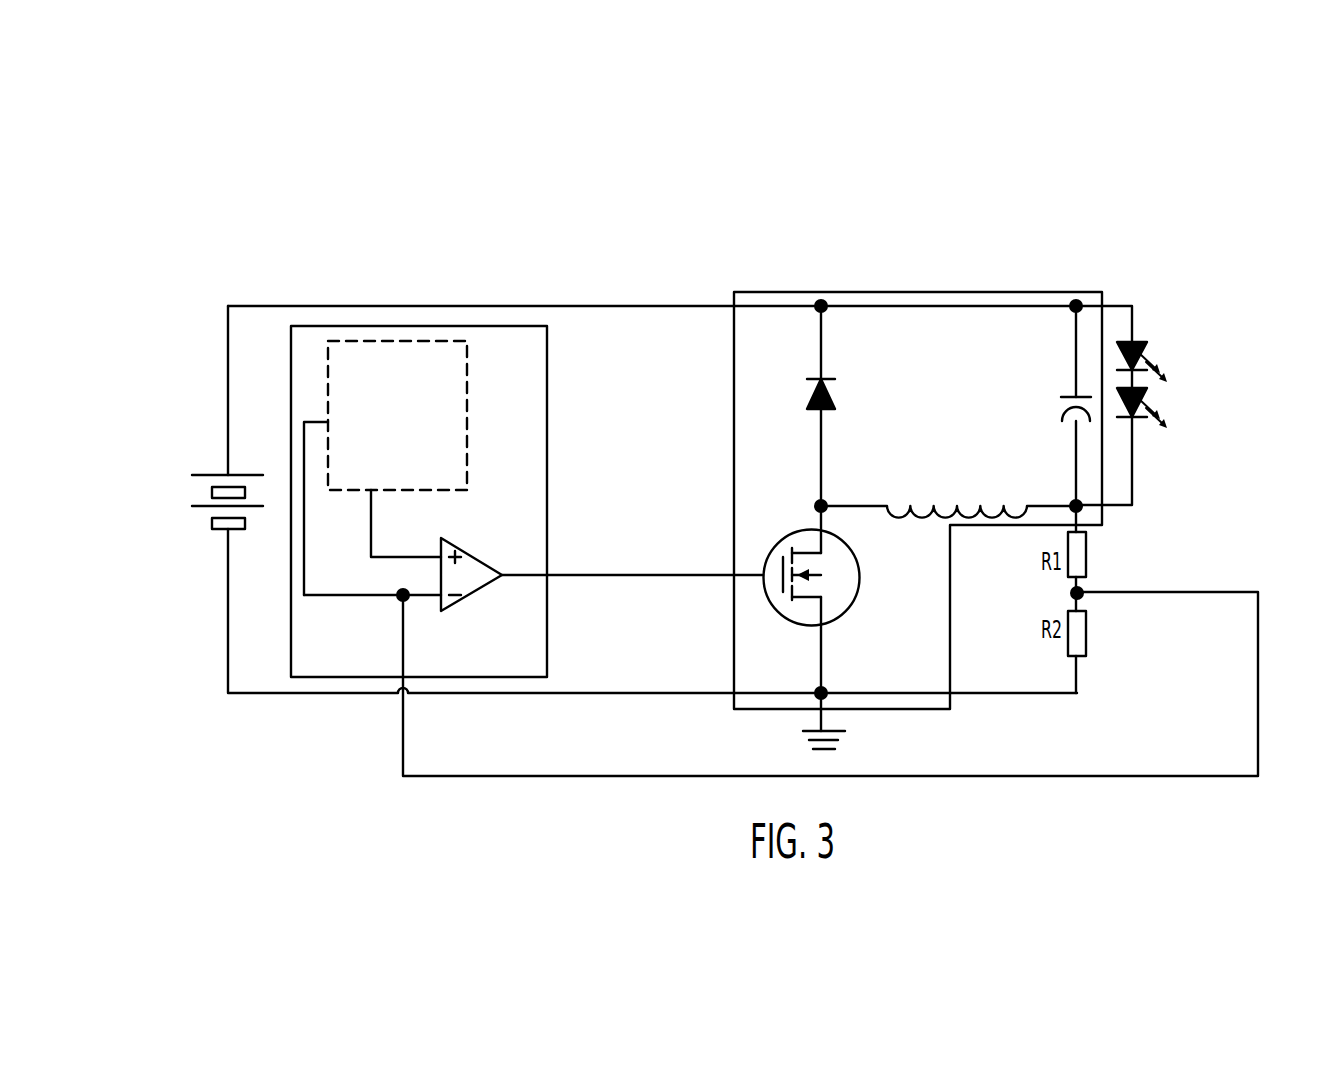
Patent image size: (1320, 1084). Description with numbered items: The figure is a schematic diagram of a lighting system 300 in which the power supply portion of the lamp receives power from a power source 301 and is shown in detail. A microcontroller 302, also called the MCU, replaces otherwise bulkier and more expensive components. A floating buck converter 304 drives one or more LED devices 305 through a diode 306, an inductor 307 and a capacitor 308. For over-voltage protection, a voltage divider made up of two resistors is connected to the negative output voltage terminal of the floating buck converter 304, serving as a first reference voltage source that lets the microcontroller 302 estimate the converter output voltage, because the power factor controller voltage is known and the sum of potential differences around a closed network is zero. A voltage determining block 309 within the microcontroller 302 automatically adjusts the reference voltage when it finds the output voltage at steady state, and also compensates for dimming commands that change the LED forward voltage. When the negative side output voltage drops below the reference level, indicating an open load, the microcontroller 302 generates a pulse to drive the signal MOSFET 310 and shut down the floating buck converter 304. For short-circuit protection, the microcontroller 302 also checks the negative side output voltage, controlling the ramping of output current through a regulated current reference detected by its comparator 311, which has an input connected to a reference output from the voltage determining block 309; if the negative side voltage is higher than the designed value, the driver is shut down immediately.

The lighting system 300 is at (1077, 208).
The power source 301 is at (212, 474).
The microcontroller 302 is at (547, 420).
The floating buck converter 304 is at (853, 292).
The LED devices 305 is at (1136, 343).
The diode 306 is at (836, 401).
The inductor 307 is at (1002, 512).
The capacitor 308 is at (1073, 397).
The voltage determining block 309 is at (468, 438).
The MOSFET 310 is at (860, 586).
The comparator 311 is at (474, 558).